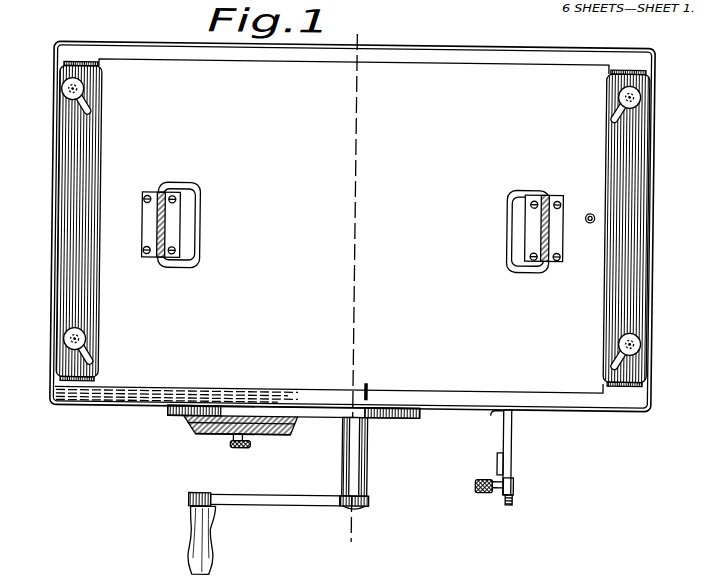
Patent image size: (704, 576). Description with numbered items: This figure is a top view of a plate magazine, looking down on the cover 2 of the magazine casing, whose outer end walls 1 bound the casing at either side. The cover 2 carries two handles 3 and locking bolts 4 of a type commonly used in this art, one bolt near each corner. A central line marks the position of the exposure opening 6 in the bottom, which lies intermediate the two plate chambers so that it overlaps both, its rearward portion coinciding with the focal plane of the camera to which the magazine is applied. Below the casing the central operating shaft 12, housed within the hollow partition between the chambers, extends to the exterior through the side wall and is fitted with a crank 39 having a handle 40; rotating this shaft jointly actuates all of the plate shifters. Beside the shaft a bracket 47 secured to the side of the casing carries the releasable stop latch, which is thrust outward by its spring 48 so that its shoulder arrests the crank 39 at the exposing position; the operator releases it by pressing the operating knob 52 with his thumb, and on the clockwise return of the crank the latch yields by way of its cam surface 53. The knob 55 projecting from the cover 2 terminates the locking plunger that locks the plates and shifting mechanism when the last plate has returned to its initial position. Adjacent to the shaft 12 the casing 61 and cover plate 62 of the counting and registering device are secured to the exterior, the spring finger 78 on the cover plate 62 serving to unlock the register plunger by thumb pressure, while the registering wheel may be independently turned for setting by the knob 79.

The outer end walls 1 is at (50, 244).
The cover 2 is at (332, 232).
The handles 3 is at (202, 230).
The locking bolts 4 is at (90, 166).
The central exposure opening 6 is at (355, 285).
The central operating shaft 12 is at (370, 466).
The crank 39 is at (290, 500).
The handle 40 is at (197, 523).
The bracket 47 is at (516, 438).
The spring 48 is at (506, 460).
The operating knob 52 is at (488, 494).
The cam surface 53 is at (514, 496).
The operating knob 55 is at (592, 220).
The casing 61 is at (336, 412).
The cover plate 62 is at (185, 426).
The spring finger 78 is at (215, 442).
The knob 79 is at (243, 449).